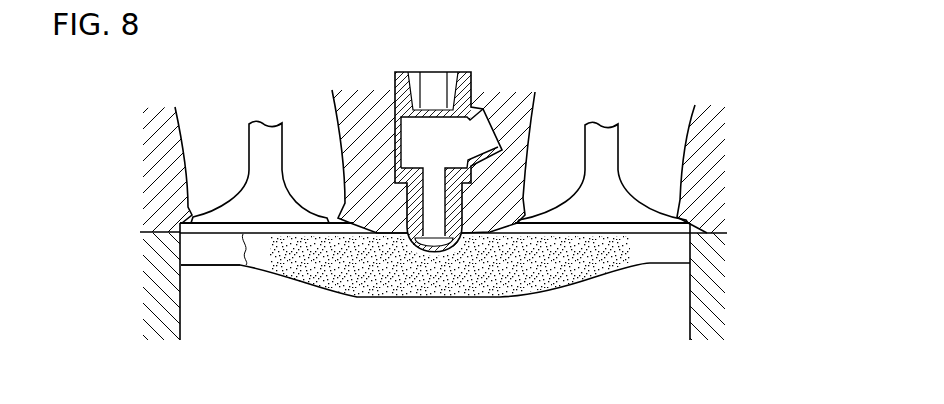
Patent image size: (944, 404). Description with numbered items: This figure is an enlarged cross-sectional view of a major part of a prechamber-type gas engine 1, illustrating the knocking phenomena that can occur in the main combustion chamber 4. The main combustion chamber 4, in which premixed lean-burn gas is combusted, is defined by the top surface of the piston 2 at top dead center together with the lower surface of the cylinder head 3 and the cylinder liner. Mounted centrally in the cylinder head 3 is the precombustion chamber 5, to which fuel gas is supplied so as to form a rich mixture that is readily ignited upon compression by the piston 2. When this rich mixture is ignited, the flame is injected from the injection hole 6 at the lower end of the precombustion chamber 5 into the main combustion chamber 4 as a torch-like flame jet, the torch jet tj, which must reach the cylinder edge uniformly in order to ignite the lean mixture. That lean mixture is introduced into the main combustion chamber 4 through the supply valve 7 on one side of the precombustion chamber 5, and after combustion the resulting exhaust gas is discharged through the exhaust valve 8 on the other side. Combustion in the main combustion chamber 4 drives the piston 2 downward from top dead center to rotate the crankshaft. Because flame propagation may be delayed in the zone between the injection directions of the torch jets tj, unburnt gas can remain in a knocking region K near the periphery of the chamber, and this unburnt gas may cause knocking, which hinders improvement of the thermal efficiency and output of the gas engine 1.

The gas engine 1 is at (454, 213).
The piston 2 is at (663, 309).
The cylinder head 3 is at (680, 215).
The main combustion chamber 4 is at (663, 247).
The precombustion chamber 5 is at (406, 162).
The injection hole 6 is at (434, 240).
The supply valve 7 is at (577, 184).
The exhaust valve 8 is at (238, 183).
The knocking region K is at (202, 251).
The torch jet tj is at (368, 273).